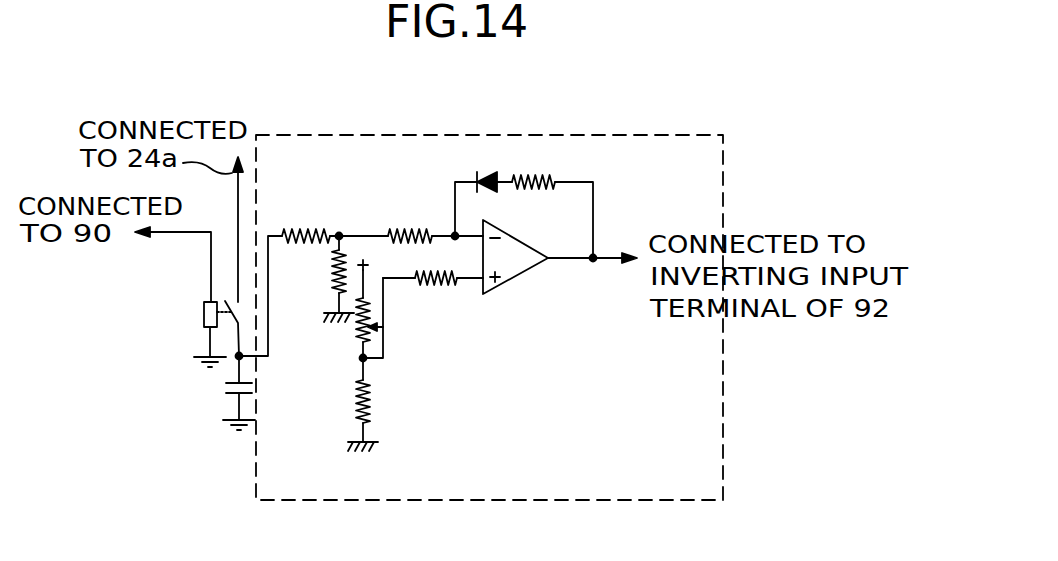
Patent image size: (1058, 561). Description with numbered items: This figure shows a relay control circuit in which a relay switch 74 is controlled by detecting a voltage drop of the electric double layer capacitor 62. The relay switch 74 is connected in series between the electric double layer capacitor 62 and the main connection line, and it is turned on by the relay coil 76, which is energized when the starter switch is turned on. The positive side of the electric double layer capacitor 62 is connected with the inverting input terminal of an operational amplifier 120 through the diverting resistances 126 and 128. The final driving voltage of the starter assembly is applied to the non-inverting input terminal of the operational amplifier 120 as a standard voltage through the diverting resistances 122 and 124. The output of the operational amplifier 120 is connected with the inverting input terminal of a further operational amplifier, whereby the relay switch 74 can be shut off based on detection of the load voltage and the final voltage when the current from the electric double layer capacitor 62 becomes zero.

The electric double layer capacitor 62 is at (226, 388).
The relay switch 74 is at (243, 313).
The relay coil 76 is at (203, 312).
The operational amplifier 120 is at (512, 278).
The diverting resistance 122 is at (383, 328).
The diverting resistance 124 is at (372, 395).
The diverting resistance 126 is at (305, 229).
The diverting resistance 128 is at (335, 282).